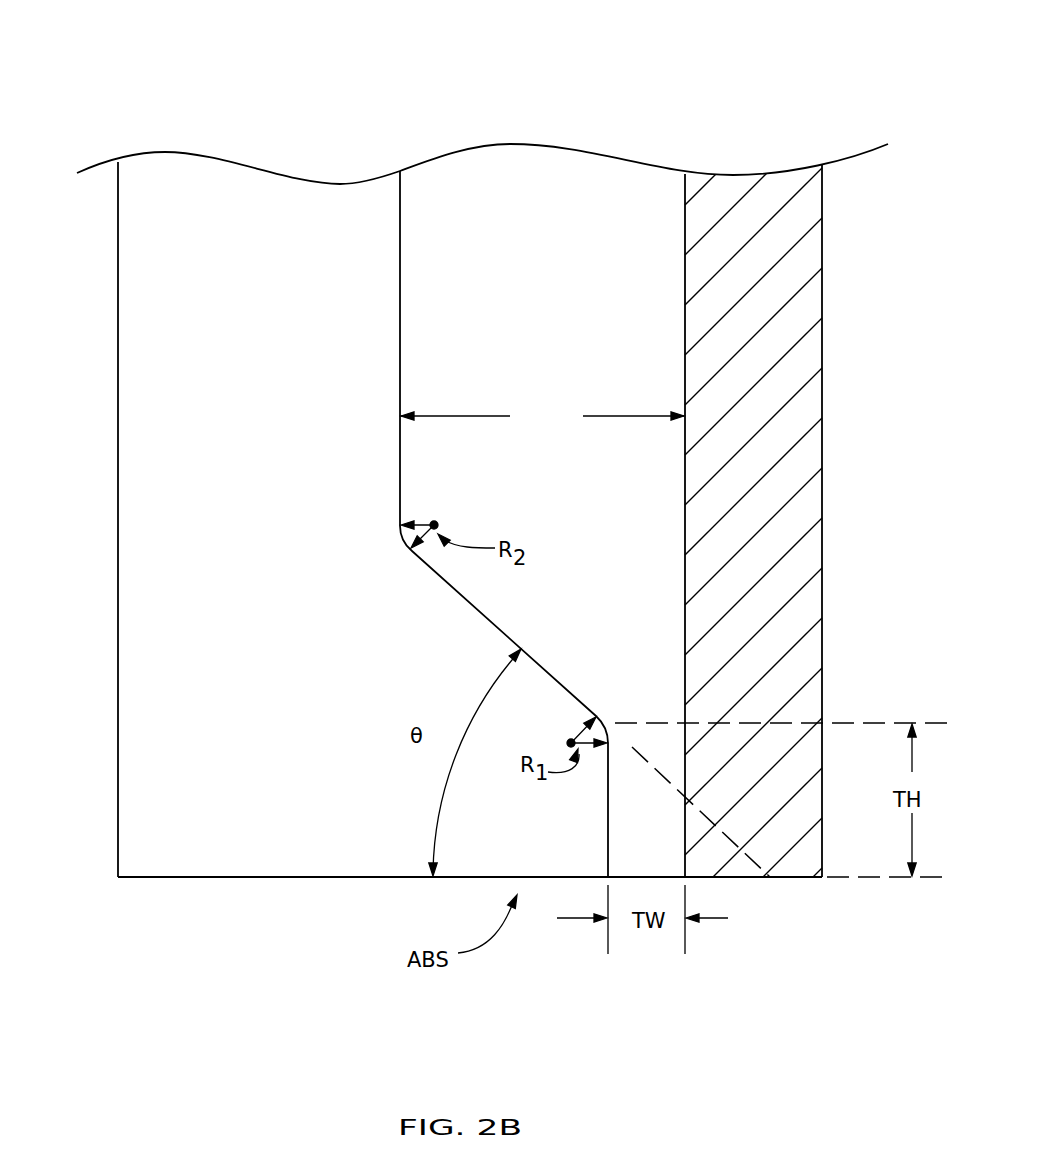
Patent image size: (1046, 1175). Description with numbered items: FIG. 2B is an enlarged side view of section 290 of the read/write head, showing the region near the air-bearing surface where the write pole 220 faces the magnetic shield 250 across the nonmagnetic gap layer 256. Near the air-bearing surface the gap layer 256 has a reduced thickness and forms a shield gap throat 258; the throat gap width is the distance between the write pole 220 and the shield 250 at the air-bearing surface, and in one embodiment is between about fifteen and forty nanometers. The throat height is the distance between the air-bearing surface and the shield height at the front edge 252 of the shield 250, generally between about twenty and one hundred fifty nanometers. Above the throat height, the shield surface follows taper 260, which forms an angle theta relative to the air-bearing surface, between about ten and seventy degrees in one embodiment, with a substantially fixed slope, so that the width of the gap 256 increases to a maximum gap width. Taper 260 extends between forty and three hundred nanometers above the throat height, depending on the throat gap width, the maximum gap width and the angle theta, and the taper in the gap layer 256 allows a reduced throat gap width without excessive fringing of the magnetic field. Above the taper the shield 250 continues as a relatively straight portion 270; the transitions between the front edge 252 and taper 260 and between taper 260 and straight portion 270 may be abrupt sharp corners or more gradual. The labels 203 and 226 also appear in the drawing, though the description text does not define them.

The section 290 is at (352, 70).
The write pole body 203 is at (92, 511).
The relatively straight portion 270 is at (400, 342).
The nonmagnetic gap layer 256 is at (555, 340).
The write pole 220 is at (809, 436).
The shield gap throat 258 is at (647, 698).
The taper 260 is at (493, 637).
The magnetic shield 250 is at (267, 822).
The front edge 252 is at (602, 816).
The shield corner 226 is at (742, 877).